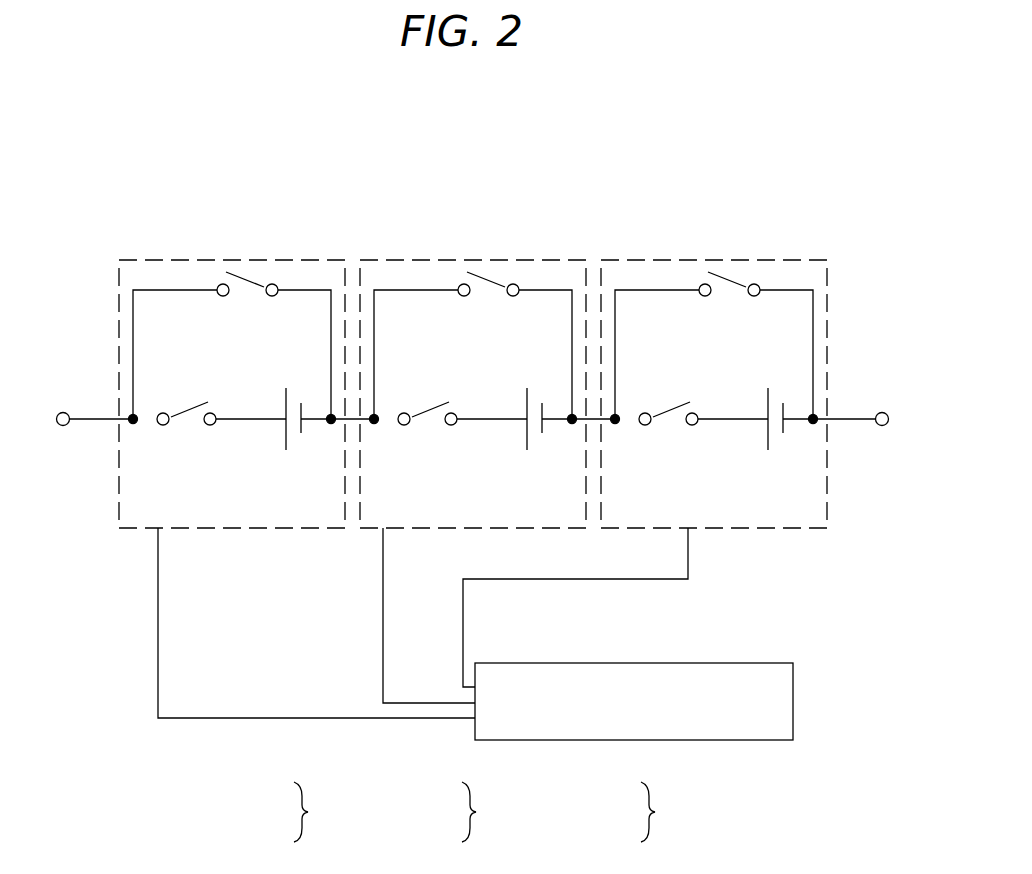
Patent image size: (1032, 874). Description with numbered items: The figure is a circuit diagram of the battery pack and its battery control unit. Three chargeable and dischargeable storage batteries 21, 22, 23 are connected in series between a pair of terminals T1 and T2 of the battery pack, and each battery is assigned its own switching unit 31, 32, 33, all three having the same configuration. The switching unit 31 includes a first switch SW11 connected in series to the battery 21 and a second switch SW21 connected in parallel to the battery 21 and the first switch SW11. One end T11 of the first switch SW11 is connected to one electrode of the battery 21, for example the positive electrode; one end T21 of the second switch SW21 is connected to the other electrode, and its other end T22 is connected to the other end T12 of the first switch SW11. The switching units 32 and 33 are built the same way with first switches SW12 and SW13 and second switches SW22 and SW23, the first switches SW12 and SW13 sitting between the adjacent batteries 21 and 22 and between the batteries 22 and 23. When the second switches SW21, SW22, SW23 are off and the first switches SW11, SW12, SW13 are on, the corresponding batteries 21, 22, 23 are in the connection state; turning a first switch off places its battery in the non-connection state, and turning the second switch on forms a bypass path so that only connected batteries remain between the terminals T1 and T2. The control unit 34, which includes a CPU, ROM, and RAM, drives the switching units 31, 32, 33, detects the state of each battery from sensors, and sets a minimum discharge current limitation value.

The terminal T1 is at (64, 411).
The terminal T2 is at (882, 411).
The one end of first switch T11 is at (217, 424).
The other end of first switch T12 is at (134, 421).
The one end of second switch T21 is at (284, 285).
The other end of second switch T22 is at (194, 285).
The first switch SW11 is at (181, 403).
The first switch SW12 is at (422, 403).
The first switch SW13 is at (663, 403).
The second switch SW21 is at (250, 278).
The second switch SW22 is at (491, 278).
The second switch SW23 is at (732, 278).
The battery 21 is at (285, 403).
The battery 22 is at (526, 403).
The battery 23 is at (767, 403).
The switching unit 31 is at (284, 812).
The switching unit 32 is at (452, 812).
The switching unit 33 is at (632, 812).
The control unit 34 is at (794, 698).